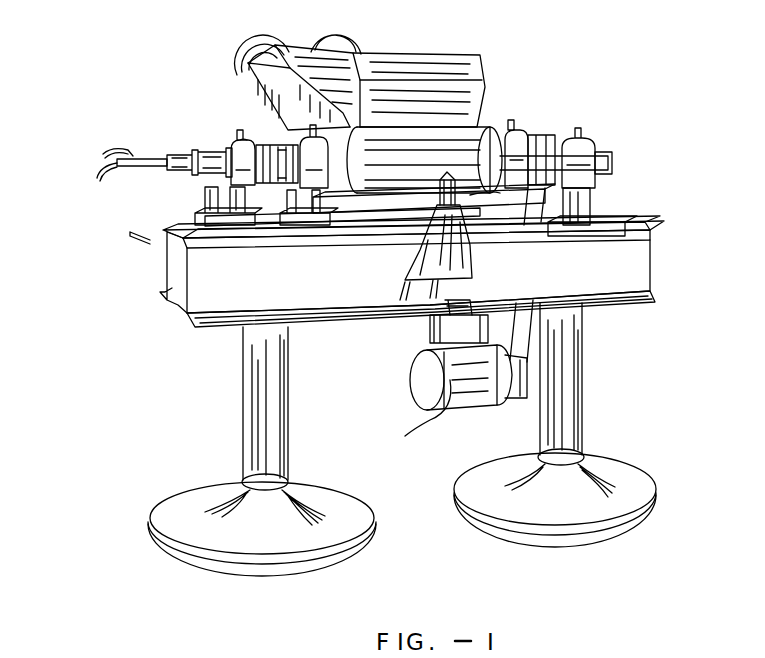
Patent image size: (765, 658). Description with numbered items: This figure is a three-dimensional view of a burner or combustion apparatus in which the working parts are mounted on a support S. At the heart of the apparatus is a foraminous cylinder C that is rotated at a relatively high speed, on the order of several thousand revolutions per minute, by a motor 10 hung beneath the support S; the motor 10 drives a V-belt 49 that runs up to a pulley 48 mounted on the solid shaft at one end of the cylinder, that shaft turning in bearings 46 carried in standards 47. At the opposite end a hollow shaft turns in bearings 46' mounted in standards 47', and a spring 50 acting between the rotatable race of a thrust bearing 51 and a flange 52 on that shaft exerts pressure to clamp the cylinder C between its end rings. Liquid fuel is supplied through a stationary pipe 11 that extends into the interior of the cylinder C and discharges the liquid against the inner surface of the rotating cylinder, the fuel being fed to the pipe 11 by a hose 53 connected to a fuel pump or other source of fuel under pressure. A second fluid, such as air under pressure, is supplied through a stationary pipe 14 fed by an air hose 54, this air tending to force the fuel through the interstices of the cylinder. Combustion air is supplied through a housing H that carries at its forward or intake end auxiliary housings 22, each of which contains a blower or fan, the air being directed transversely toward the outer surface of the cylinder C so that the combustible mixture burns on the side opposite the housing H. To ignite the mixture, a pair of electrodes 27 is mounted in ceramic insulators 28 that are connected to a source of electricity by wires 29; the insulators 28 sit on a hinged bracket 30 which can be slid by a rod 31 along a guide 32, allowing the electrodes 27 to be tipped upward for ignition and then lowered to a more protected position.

The support S is at (664, 270).
The motor 10 is at (478, 412).
The V-belt 49 is at (530, 323).
The rod 31 is at (152, 240).
The guide 32 is at (357, 208).
The electrodes 27 is at (424, 193).
The insulators 28 is at (458, 196).
The hinged bracket 30 is at (470, 254).
The wires 29 is at (406, 289).
The auxiliary housings 22 is at (266, 35).
The housing H is at (273, 111).
The foraminous cylinder C is at (472, 146).
The air hose 54 is at (113, 148).
The hose 53 is at (97, 176).
The stationary pipe 14 is at (160, 158).
The stationary pipe 11 is at (118, 168).
The standards 47' is at (260, 140).
The thrust bearing 51 is at (262, 150).
The spring 50 is at (262, 158).
The flange 52 is at (285, 176).
The bearings 46' is at (251, 199).
The standards 47 is at (558, 135).
The pulley 48 is at (540, 140).
The bearings 46 is at (592, 200).